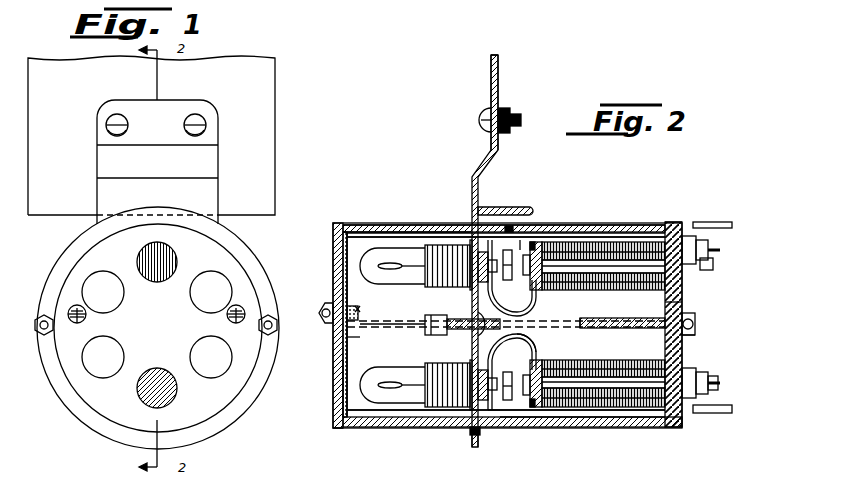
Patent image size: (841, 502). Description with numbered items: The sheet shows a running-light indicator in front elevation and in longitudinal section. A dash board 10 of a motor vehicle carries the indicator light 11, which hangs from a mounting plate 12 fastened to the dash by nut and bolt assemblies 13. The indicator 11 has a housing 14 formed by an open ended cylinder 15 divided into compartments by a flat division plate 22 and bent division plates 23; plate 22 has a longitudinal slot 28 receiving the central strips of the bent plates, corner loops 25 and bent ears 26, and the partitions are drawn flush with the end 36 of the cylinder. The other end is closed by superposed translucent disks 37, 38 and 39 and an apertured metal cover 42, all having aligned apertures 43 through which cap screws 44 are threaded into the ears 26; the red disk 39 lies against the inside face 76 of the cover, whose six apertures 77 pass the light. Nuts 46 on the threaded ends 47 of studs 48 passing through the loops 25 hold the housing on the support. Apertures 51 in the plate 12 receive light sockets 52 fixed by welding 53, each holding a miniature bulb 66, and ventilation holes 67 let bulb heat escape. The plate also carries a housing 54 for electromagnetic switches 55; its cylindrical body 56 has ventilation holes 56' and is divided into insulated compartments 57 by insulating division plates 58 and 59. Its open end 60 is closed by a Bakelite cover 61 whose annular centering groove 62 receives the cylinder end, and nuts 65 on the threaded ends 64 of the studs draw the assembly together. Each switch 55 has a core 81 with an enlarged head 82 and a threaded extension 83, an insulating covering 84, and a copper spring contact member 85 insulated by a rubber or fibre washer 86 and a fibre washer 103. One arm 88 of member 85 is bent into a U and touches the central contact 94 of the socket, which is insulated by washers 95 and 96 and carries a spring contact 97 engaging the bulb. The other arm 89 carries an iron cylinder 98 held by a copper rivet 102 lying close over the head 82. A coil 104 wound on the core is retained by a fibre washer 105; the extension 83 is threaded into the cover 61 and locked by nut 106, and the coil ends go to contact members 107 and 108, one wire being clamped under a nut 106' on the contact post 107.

In FIG. 1, the dash board 10 is at (278, 90).
In FIG. 2, the dash board 10 is at (499, 68).
In FIG. 1, the indicator light 11 is at (227, 436).
In FIG. 2, the indicator light 11 is at (418, 428).
In FIG. 1, the mounting plate 12 is at (204, 203).
In FIG. 2, the mounting plate 12 is at (479, 158).
In FIG. 1, the nut and bolt assemblies 13 is at (184, 127).
In FIG. 2, the nut and bolt assemblies 13 is at (482, 119).
In FIG. 2, the housing 14 is at (391, 222).
In FIG. 2, the open ended cylinder 15 is at (410, 226).
In FIG. 2, the division plate 22 is at (420, 322).
In FIG. 2, the division plates 23 is at (352, 397).
In FIG. 2, the loops 25 is at (428, 322).
In FIG. 2, the ears 26 is at (365, 301).
In FIG. 2, the slot 28 is at (388, 330).
In FIG. 2, the end of cylinder 36 is at (474, 433).
In FIG. 2, the translucent disk 37 is at (353, 243).
In FIG. 2, the translucent disk 38 is at (336, 223).
In FIG. 2, the translucent disk 39 is at (333, 234).
In FIG. 1, the cover 42 is at (80, 268).
In FIG. 2, the cover 42 is at (333, 421).
In FIG. 1, the apertures 43 is at (75, 326).
In FIG. 1, the cap screws 44 is at (87, 316).
In FIG. 2, the cap screws 44 is at (326, 306).
In FIG. 1, the nuts 46 is at (41, 316).
In FIG. 2, the nuts 46 is at (321, 312).
In FIG. 1, the threaded ends 47 is at (40, 327).
In FIG. 2, the threaded ends 47 is at (322, 323).
In FIG. 2, the studs 48 is at (495, 333).
In FIG. 2, the apertures 51 is at (488, 232).
In FIG. 2, the light sockets 52 is at (433, 244).
In FIG. 2, the welding 53 is at (472, 402).
In FIG. 2, the housing 54 is at (628, 222).
In FIG. 2, the electromagnetic switches 55 is at (608, 241).
In FIG. 2, the cylindrical body portion 56 is at (506, 331).
In FIG. 2, the ventilation holes 56' is at (519, 211).
In FIG. 2, the compartments 57 is at (638, 238).
In FIG. 2, the division plates 58 is at (663, 236).
In FIG. 2, the division plate 59 is at (685, 337).
In FIG. 2, the open end 60 is at (680, 228).
In FIG. 2, the cover 61 is at (684, 302).
In FIG. 2, the annular centering groove 62 is at (663, 428).
In FIG. 2, the threaded ends 64 is at (690, 327).
In FIG. 2, the nuts 65 is at (694, 332).
In FIG. 2, the light bulbs 66 is at (358, 264).
In FIG. 2, the ventilation holes 67 is at (470, 250).
In FIG. 2, the inside face 76 is at (348, 340).
In FIG. 1, the apertures 77 is at (107, 272).
In FIG. 2, the apertures 77 is at (342, 376).
In FIG. 2, the core 81 is at (627, 289).
In FIG. 2, the enlarged head 82 is at (512, 278).
In FIG. 2, the threaded extension 83 is at (714, 267).
In FIG. 2, the insulating covering 84 is at (612, 289).
In FIG. 2, the spring metal contact member 85 is at (536, 359).
In FIG. 2, the washer 86 is at (528, 297).
In FIG. 2, the arm 88 is at (540, 250).
In FIG. 2, the arm 89 is at (517, 314).
In FIG. 2, the central contact 94 is at (497, 285).
In FIG. 2, the washer 95 is at (471, 411).
In FIG. 2, the washer 96 is at (490, 412).
In FIG. 2, the spring contact 97 is at (468, 242).
In FIG. 2, the iron cylinder 98 is at (540, 428).
In FIG. 2, the rivet 102 is at (522, 248).
In FIG. 2, the fibre washer 103 is at (595, 289).
In FIG. 2, the coil 104 is at (663, 298).
In FIG. 2, the washer 105 is at (664, 358).
In FIG. 2, the locking nut 106 is at (717, 317).
In FIG. 2, the nut 106' is at (726, 331).
In FIG. 2, the contact member 107 is at (732, 223).
In FIG. 2, the contact member 108 is at (718, 257).